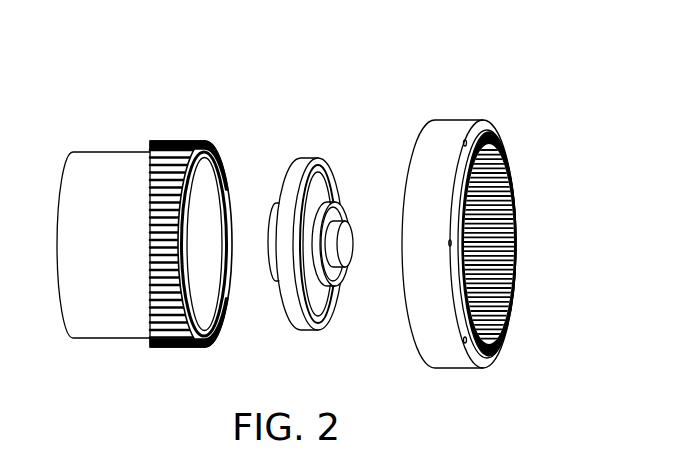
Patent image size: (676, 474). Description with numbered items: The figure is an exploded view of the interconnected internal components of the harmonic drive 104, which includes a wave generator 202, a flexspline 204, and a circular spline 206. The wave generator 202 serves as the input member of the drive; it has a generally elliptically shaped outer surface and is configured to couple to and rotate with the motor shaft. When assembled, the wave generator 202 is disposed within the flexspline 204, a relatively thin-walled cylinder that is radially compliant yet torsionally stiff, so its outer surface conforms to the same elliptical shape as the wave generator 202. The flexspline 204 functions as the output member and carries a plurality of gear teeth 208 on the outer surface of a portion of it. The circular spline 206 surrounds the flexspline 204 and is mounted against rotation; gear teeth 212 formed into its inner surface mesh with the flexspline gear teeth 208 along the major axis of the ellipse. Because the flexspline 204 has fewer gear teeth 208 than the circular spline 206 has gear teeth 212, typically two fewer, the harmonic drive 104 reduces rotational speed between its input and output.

The harmonic drive 104 is at (407, 78).
The wave generator 202 is at (306, 134).
The flexspline 204 is at (92, 153).
The circular spline 206 is at (508, 103).
The gear teeth 208 is at (180, 142).
The gear teeth 212 is at (505, 198).